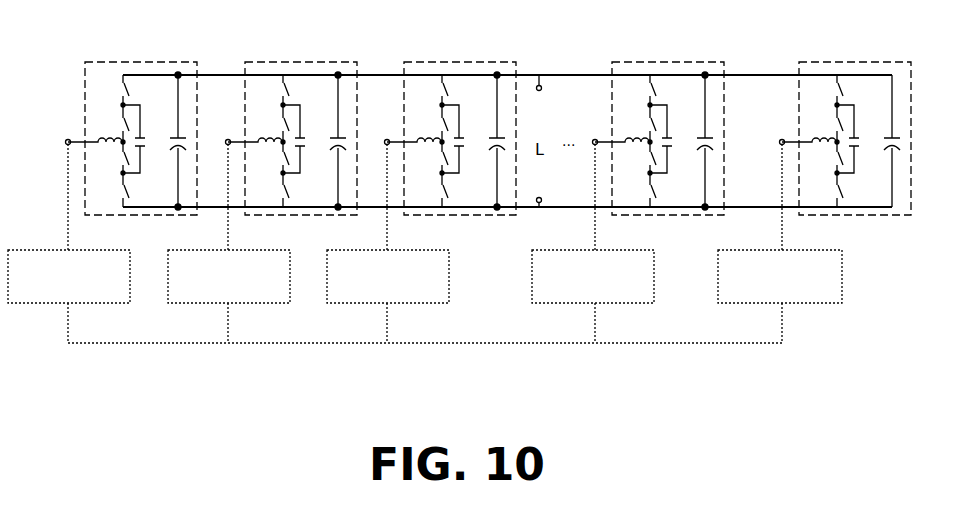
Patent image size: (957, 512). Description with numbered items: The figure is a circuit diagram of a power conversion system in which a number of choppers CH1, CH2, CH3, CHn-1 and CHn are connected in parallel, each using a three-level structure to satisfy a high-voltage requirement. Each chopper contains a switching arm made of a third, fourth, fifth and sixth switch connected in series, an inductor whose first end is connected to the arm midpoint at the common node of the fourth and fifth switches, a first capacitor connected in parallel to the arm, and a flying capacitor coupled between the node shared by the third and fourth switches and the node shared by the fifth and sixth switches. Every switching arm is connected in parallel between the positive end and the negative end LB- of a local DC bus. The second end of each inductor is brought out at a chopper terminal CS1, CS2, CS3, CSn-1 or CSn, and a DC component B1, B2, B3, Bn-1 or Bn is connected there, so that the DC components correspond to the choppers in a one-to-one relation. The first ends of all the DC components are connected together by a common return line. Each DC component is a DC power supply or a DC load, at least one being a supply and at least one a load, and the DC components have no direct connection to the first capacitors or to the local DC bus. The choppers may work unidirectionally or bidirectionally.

The chopper CH1 is at (141, 115).
The chopper CH2 is at (301, 115).
The chopper CH3 is at (460, 115).
The chopper CHn-1 is at (668, 115).
The chopper CHn is at (855, 115).
The chopper terminal CS1 is at (58, 186).
The chopper terminal CS2 is at (218, 186).
The chopper terminal CS3 is at (377, 186).
The chopper terminal CSn-1 is at (579, 186).
The chopper terminal CSn is at (769, 186).
The negative end of local DC bus LB- is at (551, 200).
The DC component B1 is at (79, 288).
The DC component B2 is at (239, 288).
The DC component B3 is at (405, 288).
The DC component Bn-1 is at (609, 288).
The DC component Bn is at (790, 288).